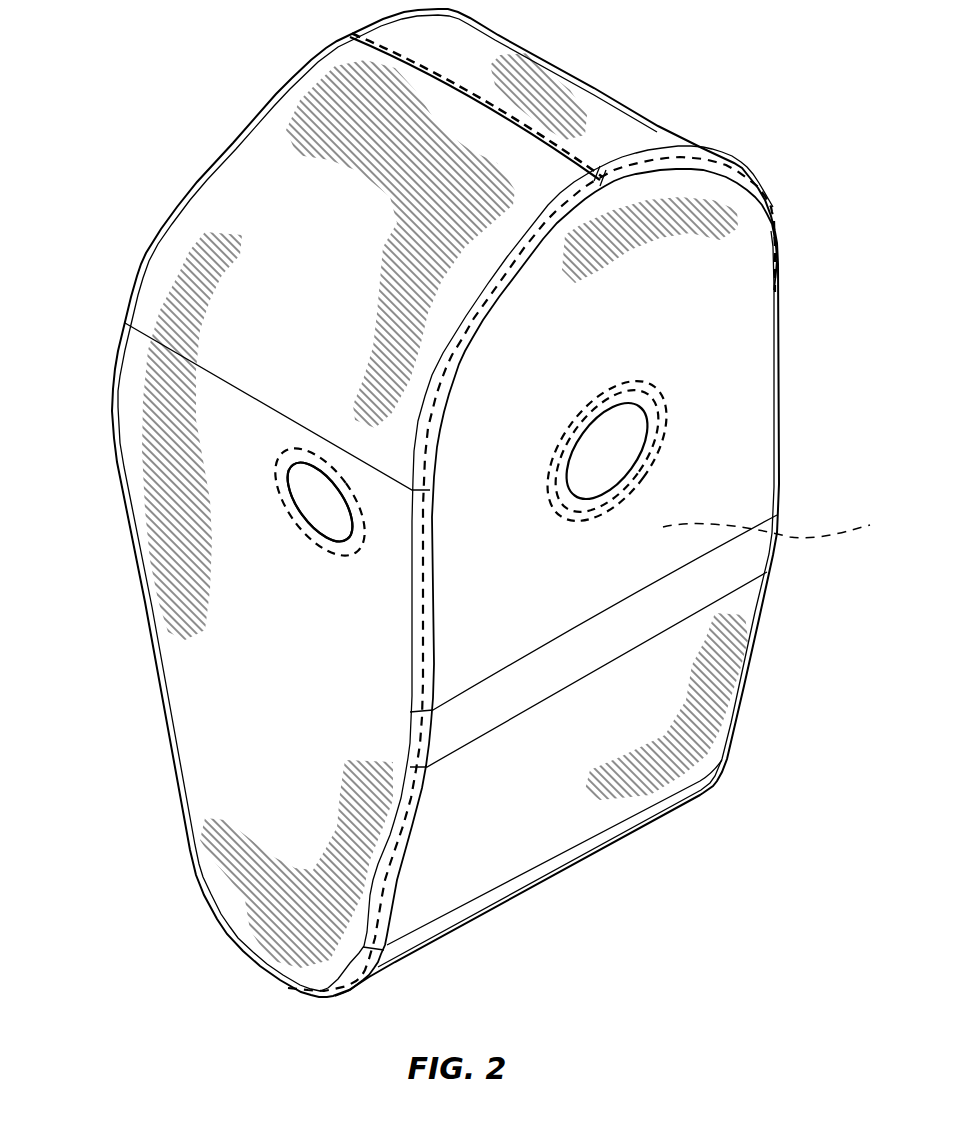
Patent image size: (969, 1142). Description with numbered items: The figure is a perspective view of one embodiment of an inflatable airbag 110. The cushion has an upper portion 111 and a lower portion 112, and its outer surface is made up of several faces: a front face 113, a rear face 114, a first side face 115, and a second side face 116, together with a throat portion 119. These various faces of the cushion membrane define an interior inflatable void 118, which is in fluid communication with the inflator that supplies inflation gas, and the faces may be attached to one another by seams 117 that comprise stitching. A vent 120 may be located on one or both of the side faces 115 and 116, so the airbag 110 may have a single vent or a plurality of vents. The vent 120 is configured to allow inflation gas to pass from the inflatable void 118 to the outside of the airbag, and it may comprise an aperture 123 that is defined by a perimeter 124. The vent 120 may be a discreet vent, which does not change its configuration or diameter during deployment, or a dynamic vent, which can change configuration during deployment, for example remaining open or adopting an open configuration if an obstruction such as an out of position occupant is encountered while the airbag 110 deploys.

The inflatable airbag 110 is at (181, 116).
The upper portion 111 is at (500, 113).
The lower portion 112 is at (254, 790).
The front face 113 is at (185, 197).
The rear face 114 is at (590, 351).
The first side face 115 is at (283, 641).
The second side face 116 is at (780, 343).
The seams 117 is at (573, 156).
The interior inflatable void 118 is at (785, 524).
The throat portion 119 is at (650, 473).
The vent 120 is at (300, 442).
The aperture 123 is at (318, 502).
The perimeter 124 is at (293, 497).